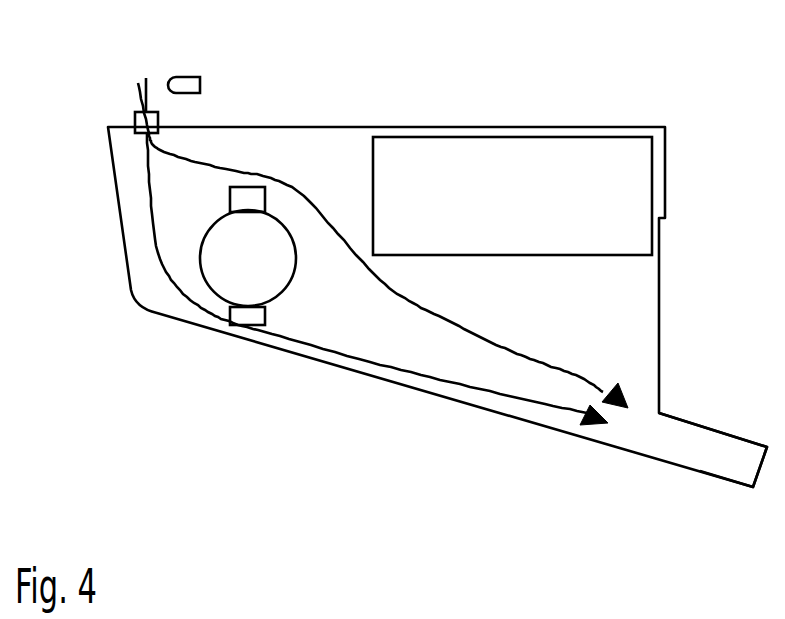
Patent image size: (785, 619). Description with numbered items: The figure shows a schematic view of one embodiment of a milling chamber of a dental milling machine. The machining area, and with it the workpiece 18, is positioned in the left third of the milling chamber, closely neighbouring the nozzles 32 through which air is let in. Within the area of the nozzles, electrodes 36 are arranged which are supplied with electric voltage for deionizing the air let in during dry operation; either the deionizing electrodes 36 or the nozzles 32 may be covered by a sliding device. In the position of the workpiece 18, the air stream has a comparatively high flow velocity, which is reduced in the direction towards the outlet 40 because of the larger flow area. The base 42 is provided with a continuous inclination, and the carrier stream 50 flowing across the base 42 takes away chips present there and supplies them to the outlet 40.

The workpiece 18 is at (232, 272).
The nozzles 32 is at (138, 97).
The electrodes 36 is at (187, 85).
The outlet 40 is at (726, 462).
The base 42 is at (353, 371).
The carrier stream 50 is at (480, 389).